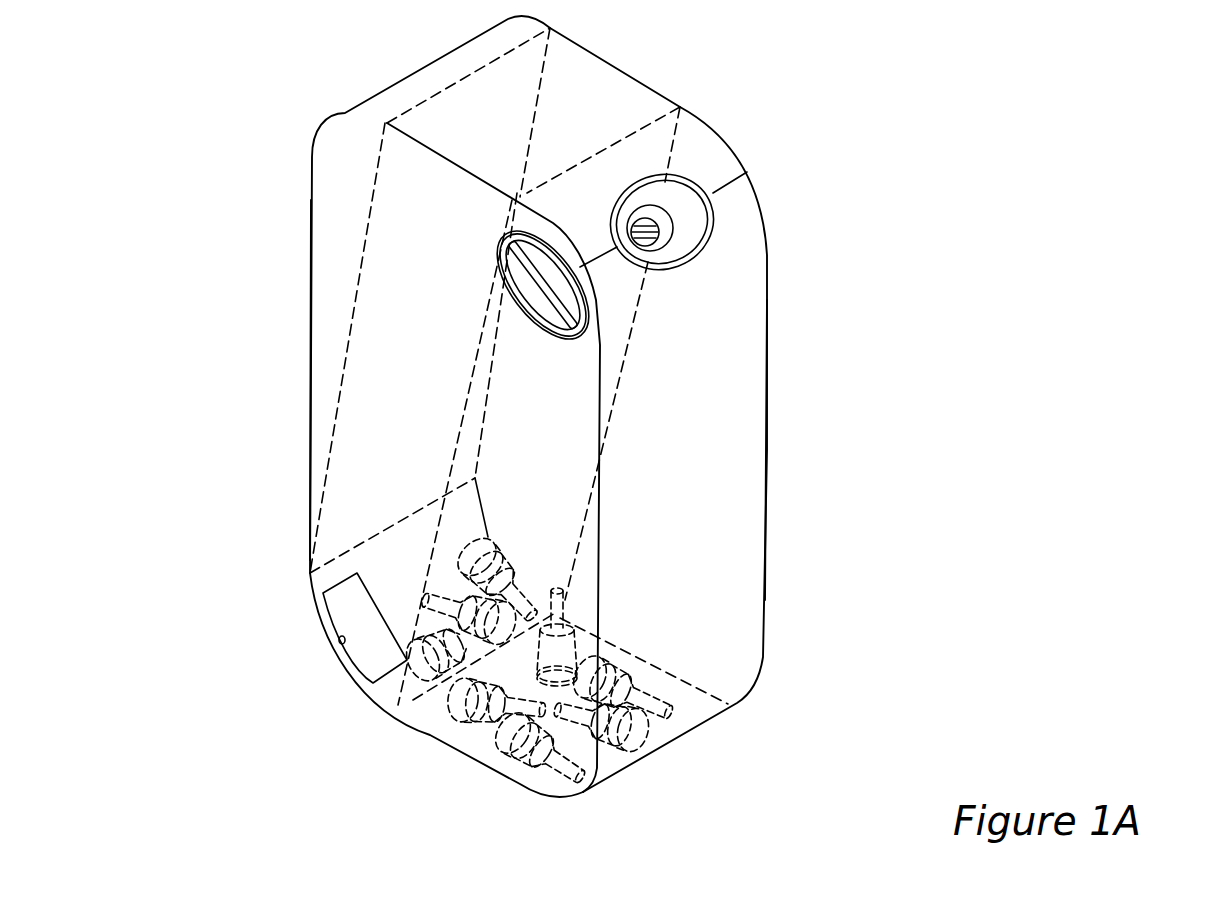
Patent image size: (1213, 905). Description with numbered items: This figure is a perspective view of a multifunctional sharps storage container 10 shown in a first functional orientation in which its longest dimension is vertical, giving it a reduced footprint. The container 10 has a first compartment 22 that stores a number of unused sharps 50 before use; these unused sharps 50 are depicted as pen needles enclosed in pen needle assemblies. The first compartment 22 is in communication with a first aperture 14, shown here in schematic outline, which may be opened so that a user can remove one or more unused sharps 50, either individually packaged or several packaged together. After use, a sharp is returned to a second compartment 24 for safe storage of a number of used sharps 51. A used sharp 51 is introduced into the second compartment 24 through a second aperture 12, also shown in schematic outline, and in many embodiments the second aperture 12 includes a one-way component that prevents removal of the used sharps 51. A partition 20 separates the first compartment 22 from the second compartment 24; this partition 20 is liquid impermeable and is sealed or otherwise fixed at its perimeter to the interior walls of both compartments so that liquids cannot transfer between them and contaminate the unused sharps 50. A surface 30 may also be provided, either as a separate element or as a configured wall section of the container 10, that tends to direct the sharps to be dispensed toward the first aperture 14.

The multifunctional sharps storage container 10 is at (263, 92).
The second aperture 12 is at (690, 215).
The first aperture 14 is at (325, 653).
The partition 20 is at (625, 357).
The first compartment 22 is at (396, 480).
The second compartment 24 is at (711, 598).
The surface 30 is at (350, 313).
The unused sharps 50 is at (490, 543).
The used sharps 51 is at (643, 753).